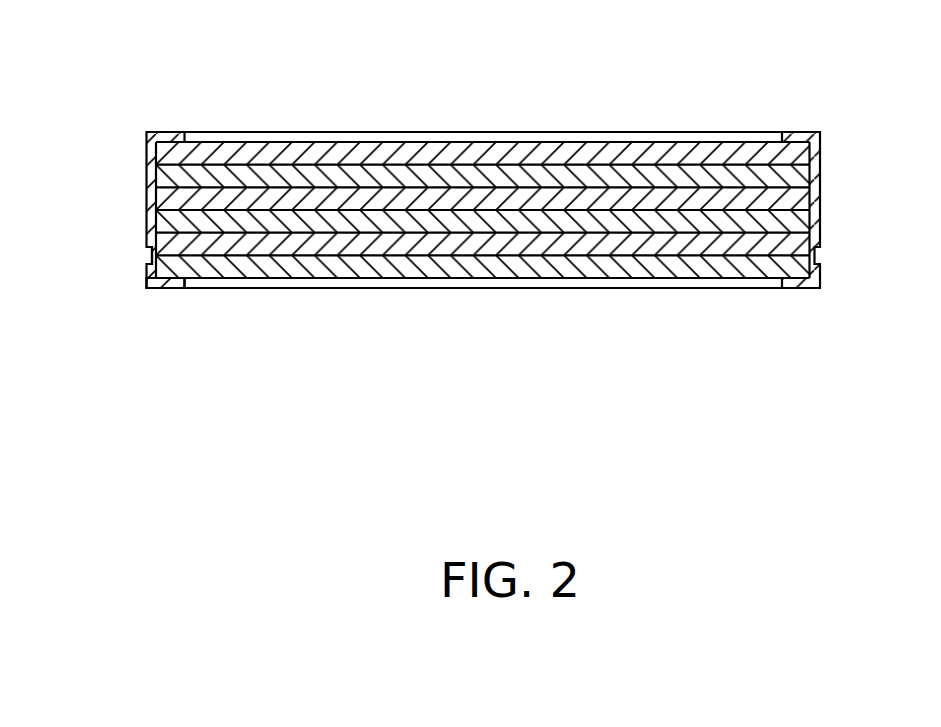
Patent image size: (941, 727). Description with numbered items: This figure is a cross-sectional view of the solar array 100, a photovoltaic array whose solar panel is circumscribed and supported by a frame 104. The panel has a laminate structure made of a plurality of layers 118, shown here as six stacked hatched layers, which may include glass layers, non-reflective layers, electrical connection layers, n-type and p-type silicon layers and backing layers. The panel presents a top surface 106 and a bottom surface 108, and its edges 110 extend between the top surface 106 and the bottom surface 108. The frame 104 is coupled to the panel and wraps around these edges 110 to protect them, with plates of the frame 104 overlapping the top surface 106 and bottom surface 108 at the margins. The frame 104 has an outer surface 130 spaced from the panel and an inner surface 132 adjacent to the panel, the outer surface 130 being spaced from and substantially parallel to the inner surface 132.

The solar array 100 is at (195, 75).
The frame 104 is at (147, 132).
The top surface 106 is at (527, 142).
The bottom surface 108 is at (497, 278).
The edges 110 is at (168, 220).
The layers 118 is at (796, 174).
The outer surface 130 is at (147, 265).
The inner surface 132 is at (158, 263).